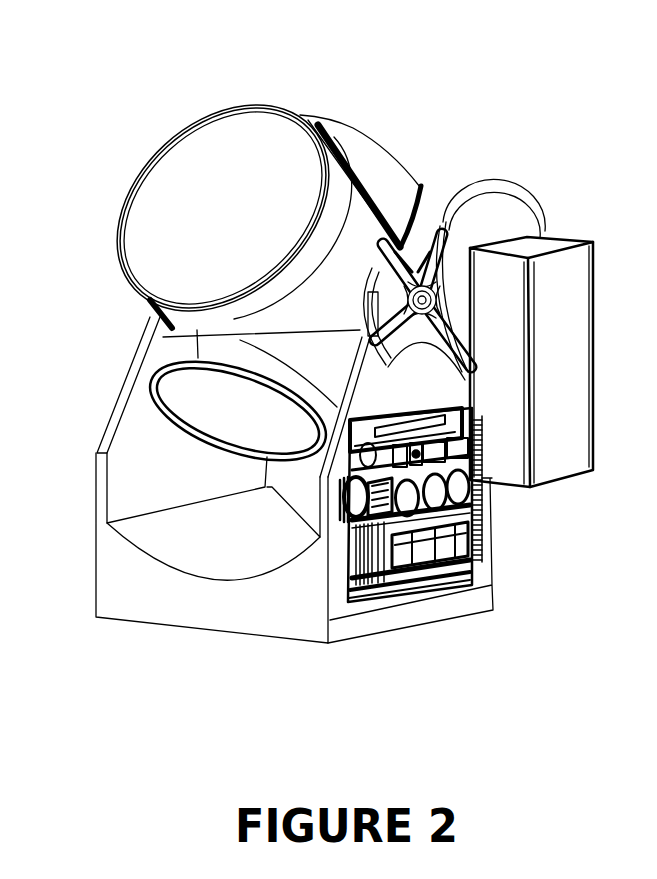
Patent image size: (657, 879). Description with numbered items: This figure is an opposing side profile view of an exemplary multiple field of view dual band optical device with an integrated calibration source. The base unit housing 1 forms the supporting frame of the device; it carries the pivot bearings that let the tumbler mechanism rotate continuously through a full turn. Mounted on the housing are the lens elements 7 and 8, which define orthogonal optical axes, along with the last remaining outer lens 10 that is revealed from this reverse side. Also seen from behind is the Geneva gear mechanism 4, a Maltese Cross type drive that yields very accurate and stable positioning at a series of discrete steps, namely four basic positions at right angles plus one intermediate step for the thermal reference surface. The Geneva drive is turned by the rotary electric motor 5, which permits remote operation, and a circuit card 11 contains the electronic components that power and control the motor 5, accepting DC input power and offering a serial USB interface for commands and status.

The base unit housing 1 is at (202, 635).
The Geneva gear mechanism 4 is at (443, 223).
The rotary electric motor 5 is at (548, 493).
The lens element 7 is at (387, 137).
The lens element 8 is at (202, 173).
The outer lens 10 is at (220, 407).
The circuit card 11 is at (418, 590).